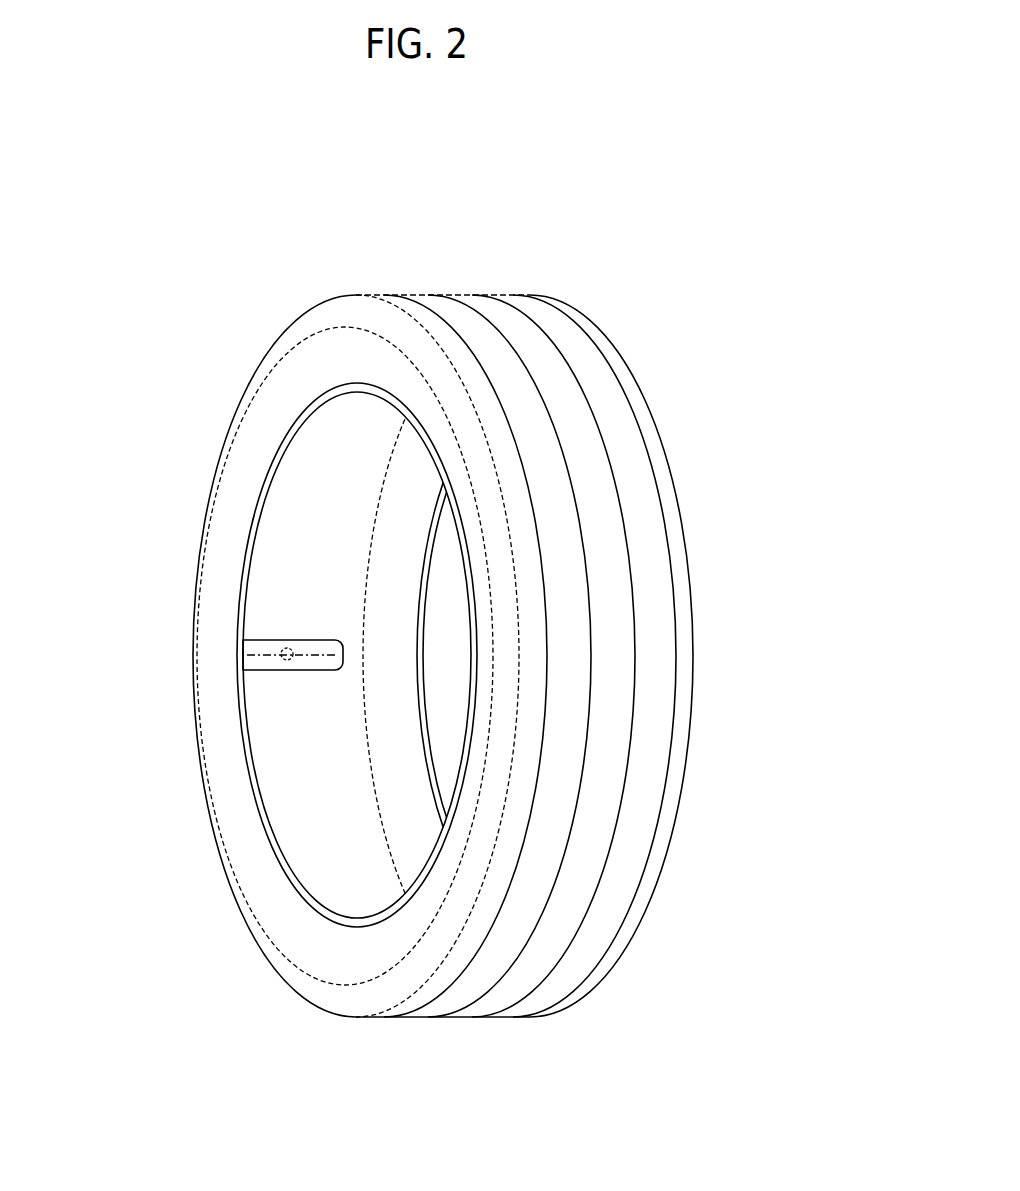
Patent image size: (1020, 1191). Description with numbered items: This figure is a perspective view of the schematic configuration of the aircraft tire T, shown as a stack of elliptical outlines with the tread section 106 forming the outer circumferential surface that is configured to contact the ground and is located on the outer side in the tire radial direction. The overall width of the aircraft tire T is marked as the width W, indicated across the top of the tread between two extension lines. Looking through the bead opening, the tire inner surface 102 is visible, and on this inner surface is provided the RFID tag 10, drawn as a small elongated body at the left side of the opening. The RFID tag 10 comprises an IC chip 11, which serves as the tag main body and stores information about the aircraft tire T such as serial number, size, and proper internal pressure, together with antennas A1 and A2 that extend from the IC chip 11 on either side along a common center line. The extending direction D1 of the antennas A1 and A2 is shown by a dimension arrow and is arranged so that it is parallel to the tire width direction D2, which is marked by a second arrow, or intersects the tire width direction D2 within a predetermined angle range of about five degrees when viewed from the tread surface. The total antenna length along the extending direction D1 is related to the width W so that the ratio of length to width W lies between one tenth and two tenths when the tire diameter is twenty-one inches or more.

The aircraft tire T is at (607, 265).
The width of the aircraft tire W is at (532, 295).
The RFID tag 10 is at (283, 672).
The IC chip 11 is at (284, 640).
The tire inner surface 102 is at (305, 790).
The tread section 106 is at (630, 830).
The antenna A1 is at (256, 660).
The antenna A2 is at (315, 661).
The extending direction D1 is at (416, 655).
The tire width direction D2 is at (360, 582).